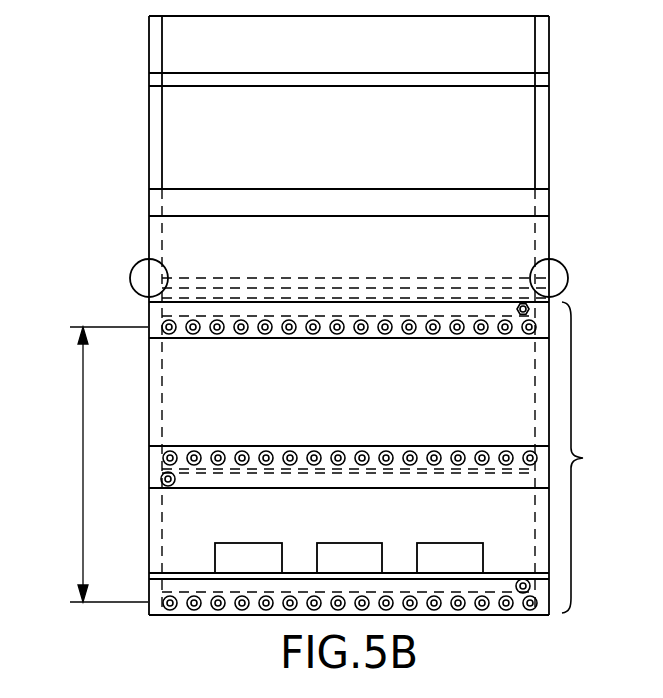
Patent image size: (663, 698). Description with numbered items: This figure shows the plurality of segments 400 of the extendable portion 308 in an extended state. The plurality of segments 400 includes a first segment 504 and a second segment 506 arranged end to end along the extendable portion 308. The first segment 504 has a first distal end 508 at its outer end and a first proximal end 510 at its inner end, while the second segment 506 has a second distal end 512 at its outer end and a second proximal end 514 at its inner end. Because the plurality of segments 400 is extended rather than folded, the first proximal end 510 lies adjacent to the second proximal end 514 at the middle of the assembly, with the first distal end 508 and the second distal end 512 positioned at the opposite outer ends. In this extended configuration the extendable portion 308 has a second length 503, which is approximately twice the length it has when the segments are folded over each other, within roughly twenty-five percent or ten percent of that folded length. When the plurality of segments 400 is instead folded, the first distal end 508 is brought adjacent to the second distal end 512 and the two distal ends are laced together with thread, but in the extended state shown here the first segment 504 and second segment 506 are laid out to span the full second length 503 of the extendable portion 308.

The plurality of segments 400 is at (58, 316).
The extendable portion 308 is at (593, 457).
The second length 503 is at (83, 548).
The first segment 504 is at (173, 401).
The second segment 506 is at (168, 525).
The first distal end 508 is at (148, 308).
The first proximal end 510 is at (157, 460).
The second distal end 512 is at (158, 606).
The second proximal end 514 is at (165, 471).